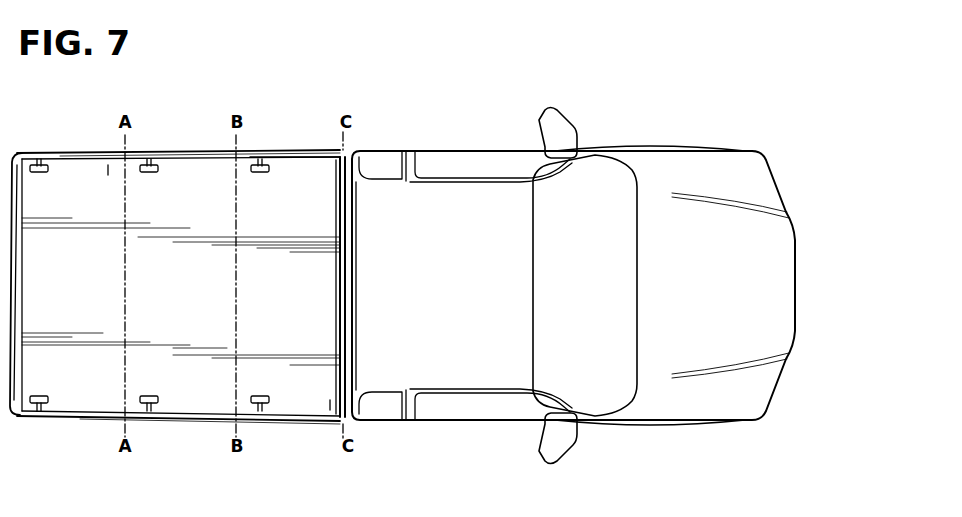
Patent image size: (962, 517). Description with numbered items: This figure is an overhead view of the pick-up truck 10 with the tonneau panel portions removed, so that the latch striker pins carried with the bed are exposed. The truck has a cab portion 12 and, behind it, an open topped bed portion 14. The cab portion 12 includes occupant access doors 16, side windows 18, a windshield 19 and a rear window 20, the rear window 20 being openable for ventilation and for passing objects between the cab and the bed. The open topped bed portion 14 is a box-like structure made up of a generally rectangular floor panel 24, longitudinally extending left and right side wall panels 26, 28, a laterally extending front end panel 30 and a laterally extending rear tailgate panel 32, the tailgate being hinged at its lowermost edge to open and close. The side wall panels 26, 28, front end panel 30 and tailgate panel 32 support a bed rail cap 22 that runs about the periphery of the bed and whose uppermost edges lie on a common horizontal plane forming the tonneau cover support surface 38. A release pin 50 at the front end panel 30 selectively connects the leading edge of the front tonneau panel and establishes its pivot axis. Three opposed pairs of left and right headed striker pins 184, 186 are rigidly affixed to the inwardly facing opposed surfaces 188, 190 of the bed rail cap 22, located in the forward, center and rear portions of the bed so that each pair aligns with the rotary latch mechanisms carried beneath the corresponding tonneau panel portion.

The motor vehicle 10 is at (646, 78).
The cab portion 12 is at (662, 144).
The open topped bed portion 14 is at (97, 422).
The occupant access doors 16 is at (407, 151).
The side windows 18 is at (480, 160).
The windshield 19 is at (604, 178).
The rear window 20 is at (357, 264).
The bed rail cap 22 is at (207, 155).
The floor panel 24 is at (167, 302).
The left side wall panel 26 is at (308, 155).
The right side wall panel 28 is at (313, 414).
The front end panel 30 is at (343, 309).
The rear tailgate panel 32 is at (13, 270).
The tonneau cover support surface 38 is at (95, 152).
The release pin 50 is at (345, 172).
The left headed striker pins 184 is at (50, 168).
The right headed striker pins 186 is at (50, 402).
The inwardly facing surface 188 is at (108, 164).
The inwardly facing surface 190 is at (330, 410).